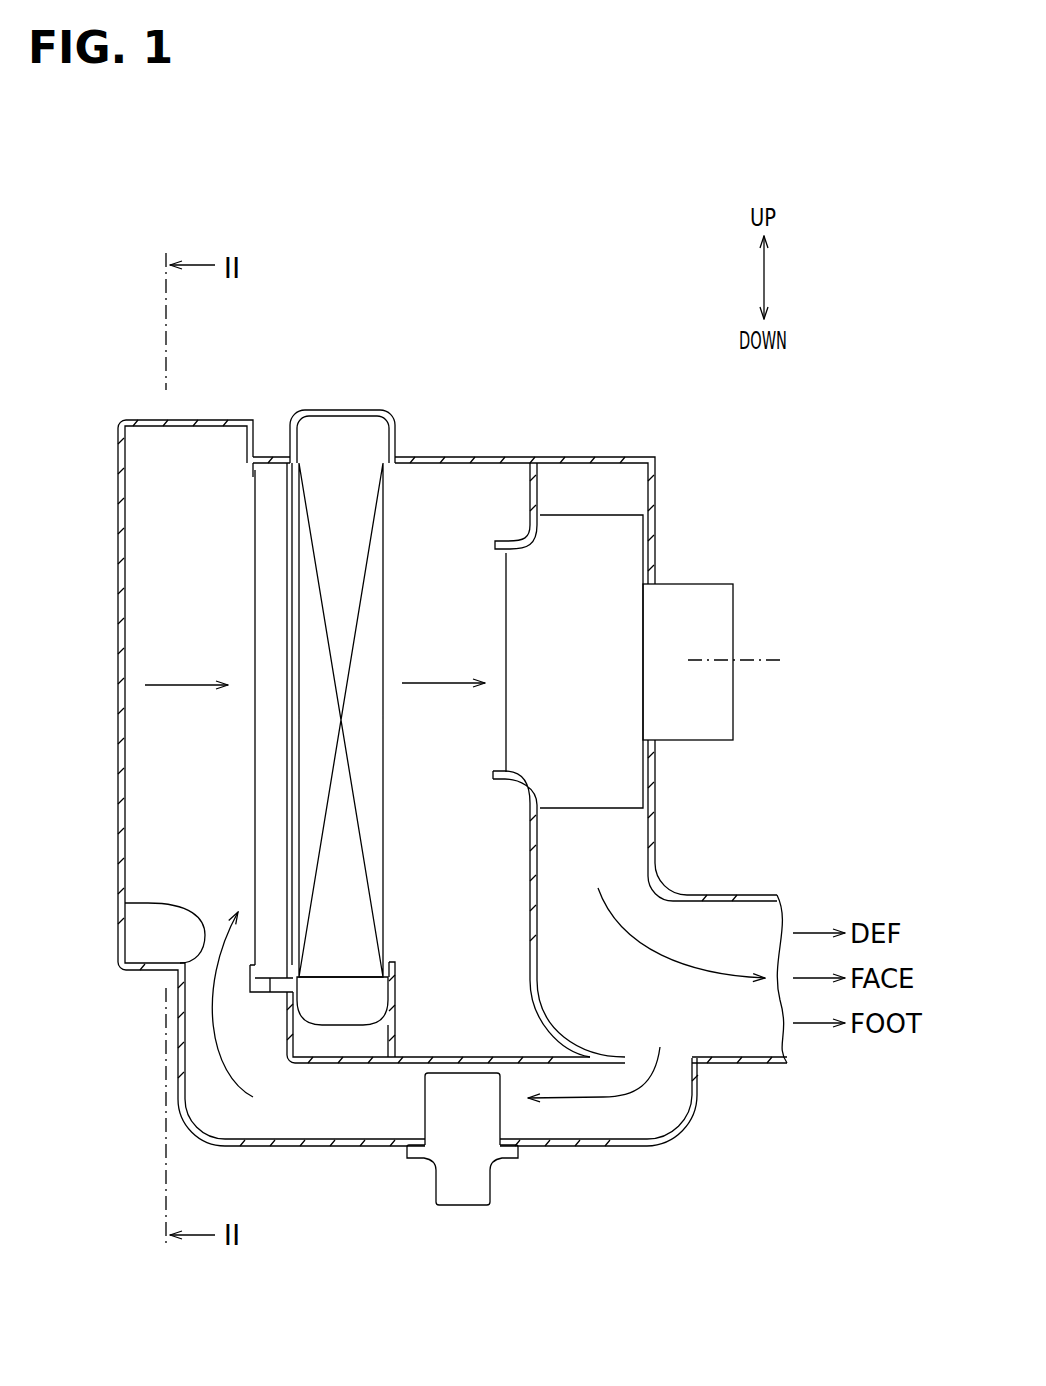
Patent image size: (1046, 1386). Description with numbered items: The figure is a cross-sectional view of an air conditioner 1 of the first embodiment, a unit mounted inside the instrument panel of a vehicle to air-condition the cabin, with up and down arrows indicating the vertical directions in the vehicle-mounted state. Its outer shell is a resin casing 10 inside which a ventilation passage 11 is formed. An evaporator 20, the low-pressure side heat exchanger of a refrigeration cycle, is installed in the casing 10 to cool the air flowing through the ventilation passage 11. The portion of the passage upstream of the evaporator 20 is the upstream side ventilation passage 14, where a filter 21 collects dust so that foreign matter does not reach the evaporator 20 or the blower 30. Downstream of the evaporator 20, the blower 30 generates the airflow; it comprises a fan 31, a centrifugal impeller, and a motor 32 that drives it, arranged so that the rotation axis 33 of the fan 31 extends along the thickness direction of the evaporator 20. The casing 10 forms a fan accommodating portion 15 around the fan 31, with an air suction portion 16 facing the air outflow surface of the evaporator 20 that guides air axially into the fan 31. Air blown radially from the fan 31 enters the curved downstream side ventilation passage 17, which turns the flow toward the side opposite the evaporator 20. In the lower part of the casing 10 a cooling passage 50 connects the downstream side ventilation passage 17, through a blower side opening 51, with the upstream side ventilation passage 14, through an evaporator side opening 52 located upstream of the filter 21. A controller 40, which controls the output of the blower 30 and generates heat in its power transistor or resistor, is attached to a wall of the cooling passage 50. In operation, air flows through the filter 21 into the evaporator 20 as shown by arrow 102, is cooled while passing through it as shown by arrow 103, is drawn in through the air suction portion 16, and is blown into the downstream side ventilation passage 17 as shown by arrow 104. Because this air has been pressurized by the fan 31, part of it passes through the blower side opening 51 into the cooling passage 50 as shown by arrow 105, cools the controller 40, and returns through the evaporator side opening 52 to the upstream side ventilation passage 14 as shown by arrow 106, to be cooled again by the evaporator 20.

The air conditioner 1 is at (518, 228).
The casing 10 is at (118, 566).
The ventilation passage 11 is at (404, 743).
The upstream side ventilation passage 14 is at (165, 765).
The downstream side ventilation passage 17 is at (735, 947).
The fan accommodating portion 15 is at (515, 537).
The air suction portion 16 is at (493, 557).
The evaporator 20 is at (336, 510).
The filter 21 is at (272, 518).
The blower 30 is at (705, 378).
The fan 31 is at (618, 548).
The motor 32 is at (693, 617).
The rotation axis 33 is at (750, 660).
The controller 40 is at (463, 1186).
The cooling passage 50 is at (547, 1120).
The blower side opening 51 is at (677, 1052).
The evaporator side opening 52 is at (125, 903).
The arrow 102 is at (180, 685).
The arrow 103 is at (436, 683).
The arrow 104 is at (665, 965).
The arrow 105 is at (602, 1097).
The arrow 106 is at (236, 1140).